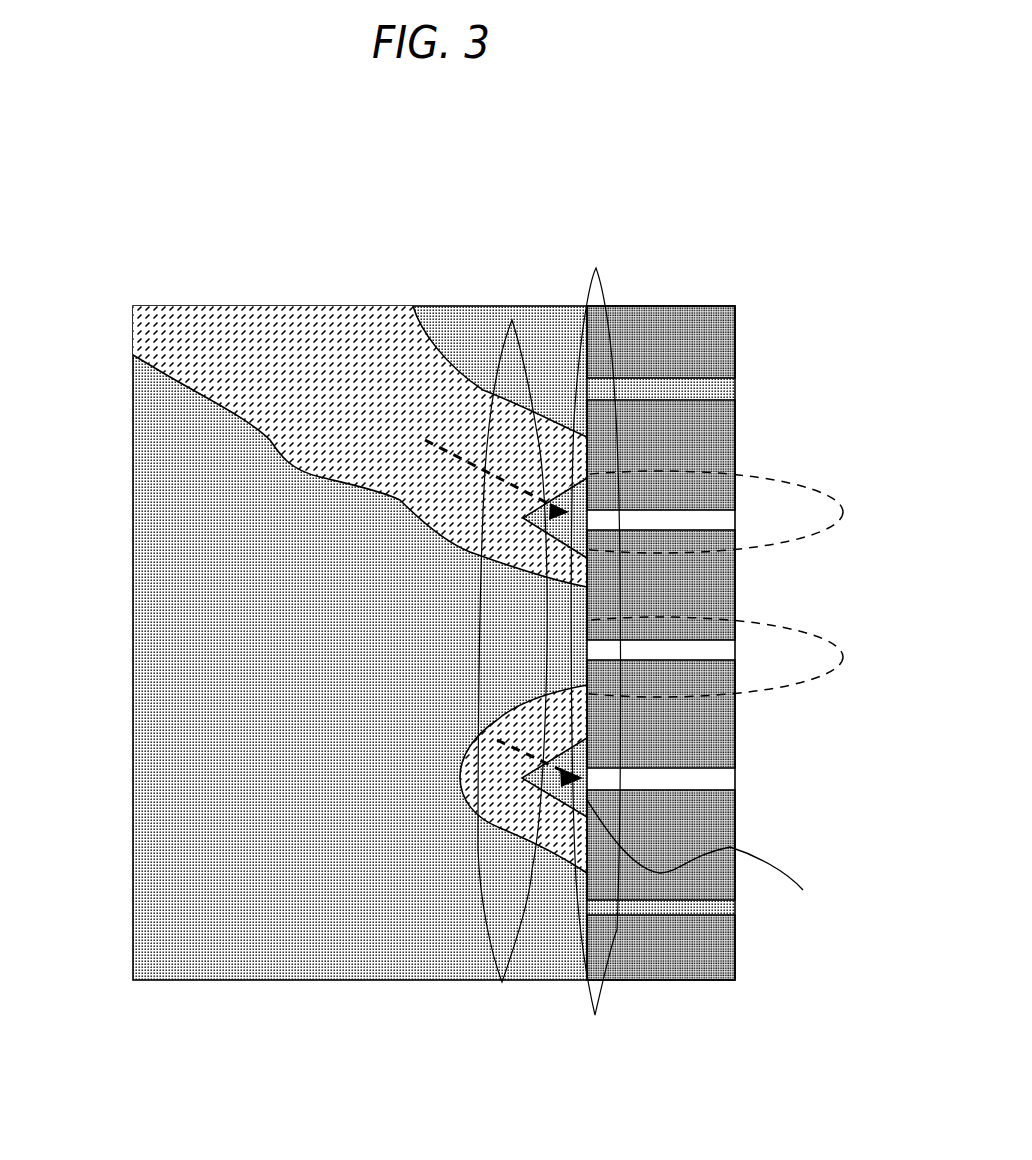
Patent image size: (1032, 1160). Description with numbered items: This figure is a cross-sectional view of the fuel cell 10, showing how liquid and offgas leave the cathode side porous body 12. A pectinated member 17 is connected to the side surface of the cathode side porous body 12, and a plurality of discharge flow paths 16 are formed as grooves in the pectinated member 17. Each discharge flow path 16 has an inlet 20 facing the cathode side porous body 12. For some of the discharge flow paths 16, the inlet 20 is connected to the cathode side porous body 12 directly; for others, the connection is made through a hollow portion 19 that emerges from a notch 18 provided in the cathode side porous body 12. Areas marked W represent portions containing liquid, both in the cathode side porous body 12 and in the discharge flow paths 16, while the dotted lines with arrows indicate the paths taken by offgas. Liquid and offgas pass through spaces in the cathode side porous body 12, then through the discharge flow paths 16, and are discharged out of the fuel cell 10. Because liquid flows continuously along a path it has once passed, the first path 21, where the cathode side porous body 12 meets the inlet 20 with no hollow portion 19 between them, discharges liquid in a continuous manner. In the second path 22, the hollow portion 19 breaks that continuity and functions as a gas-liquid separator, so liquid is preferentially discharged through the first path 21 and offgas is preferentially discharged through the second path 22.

The fuel cell 10 is at (712, 240).
The cathode side porous body 12 is at (235, 340).
The discharge flow path 16 is at (735, 422).
The pectinated member 17 is at (702, 350).
The notch 18 is at (465, 360).
The hollow portion 19 is at (612, 340).
The inlet 20 is at (704, 860).
The first path 21 is at (800, 627).
The second path 22 is at (812, 490).
The portions with liquid W is at (548, 325).